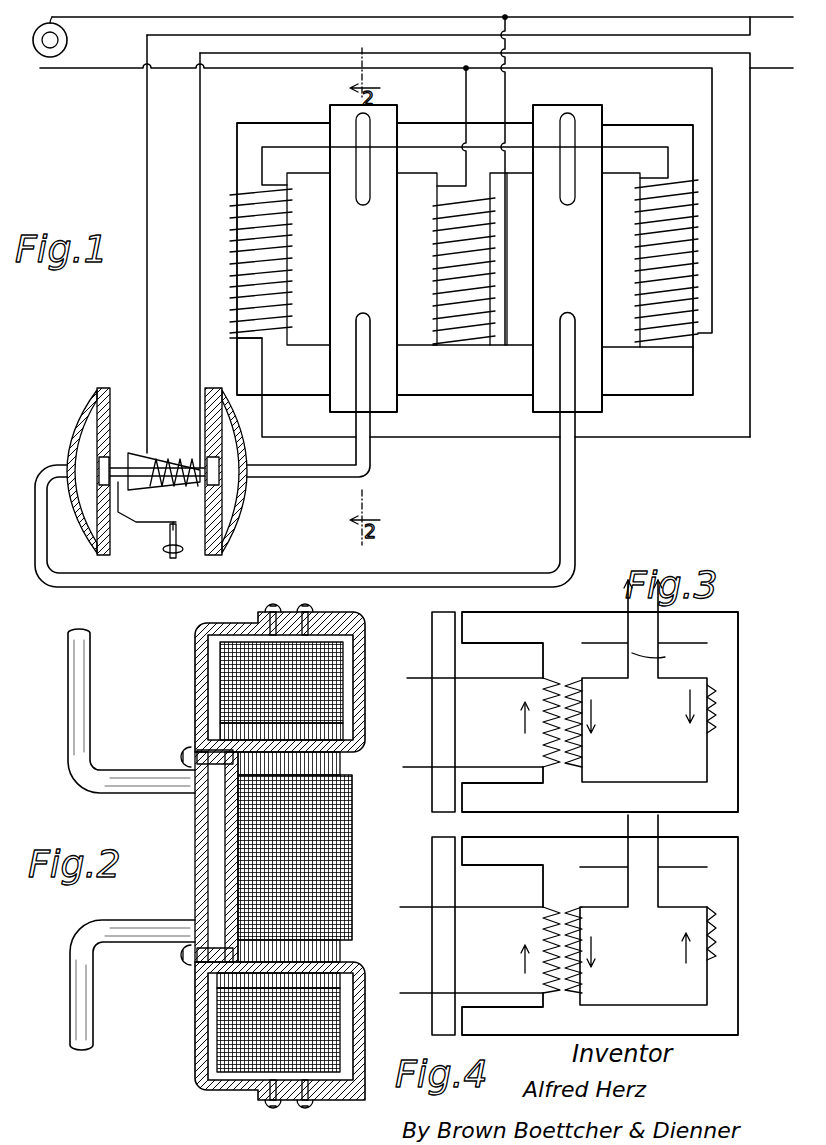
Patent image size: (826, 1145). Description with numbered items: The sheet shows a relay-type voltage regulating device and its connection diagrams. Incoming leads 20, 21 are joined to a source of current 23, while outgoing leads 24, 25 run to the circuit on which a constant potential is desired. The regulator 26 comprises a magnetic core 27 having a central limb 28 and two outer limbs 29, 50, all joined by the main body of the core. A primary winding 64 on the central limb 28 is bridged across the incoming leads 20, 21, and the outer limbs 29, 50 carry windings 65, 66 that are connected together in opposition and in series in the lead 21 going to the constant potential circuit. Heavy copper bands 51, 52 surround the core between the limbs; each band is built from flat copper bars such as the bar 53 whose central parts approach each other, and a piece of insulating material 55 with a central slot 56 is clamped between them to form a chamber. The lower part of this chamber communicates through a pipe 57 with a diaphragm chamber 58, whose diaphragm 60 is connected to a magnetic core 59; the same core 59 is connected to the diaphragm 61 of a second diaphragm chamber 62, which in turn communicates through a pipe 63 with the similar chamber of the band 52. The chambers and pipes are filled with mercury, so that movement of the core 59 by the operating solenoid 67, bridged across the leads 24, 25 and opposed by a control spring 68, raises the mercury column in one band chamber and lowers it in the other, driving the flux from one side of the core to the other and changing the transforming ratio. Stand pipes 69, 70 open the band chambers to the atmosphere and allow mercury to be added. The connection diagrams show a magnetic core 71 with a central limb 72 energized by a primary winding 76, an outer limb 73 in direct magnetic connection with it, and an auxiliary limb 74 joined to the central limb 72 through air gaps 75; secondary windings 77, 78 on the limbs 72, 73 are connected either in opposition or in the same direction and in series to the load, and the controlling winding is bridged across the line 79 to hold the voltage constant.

In FIG. 1, the incoming lead 20 is at (135, 19).
In FIG. 1, the incoming lead 21 is at (140, 70).
In FIG. 1, the source of current 23 is at (56, 57).
In FIG. 1, the outgoing lead 24 is at (765, 22).
In FIG. 1, the outgoing lead 25 is at (775, 70).
In FIG. 1, the regulator 26 is at (265, 123).
In FIG. 1, the magnetic core 27 is at (638, 373).
In FIG. 2, the magnetic core 27 is at (305, 685).
In FIG. 1, the central limb 28 is at (468, 348).
In FIG. 1, the outer limb 29 is at (250, 350).
In FIG. 1, the outer limb 50 is at (660, 345).
In FIG. 1, the copper band 51 is at (365, 238).
In FIG. 2, the copper band 51 is at (195, 690).
In FIG. 1, the copper band 52 is at (562, 245).
In FIG. 2, the copper band 52 is at (365, 632).
In FIG. 2, the flat copper bar 53 is at (248, 623).
In FIG. 2, the insulating material 55 is at (193, 750).
In FIG. 2, the central slot 56 is at (218, 820).
In FIG. 1, the pipe 57 is at (335, 475).
In FIG. 2, the pipe 57 is at (140, 930).
In FIG. 1, the diaphragm chamber 58 is at (225, 500).
In FIG. 1, the magnetic core 59 is at (140, 463).
In FIG. 1, the diaphragm 60 is at (213, 445).
In FIG. 1, the diaphragm 61 is at (97, 425).
In FIG. 1, the diaphragm chamber 62 is at (88, 452).
In FIG. 1, the pipe 63 is at (568, 480).
In FIG. 1, the primary winding 64 is at (462, 243).
In FIG. 1, the winding 65 is at (245, 228).
In FIG. 1, the winding 66 is at (668, 247).
In FIG. 1, the operating solenoid 67 is at (161, 502).
In FIG. 1, the control spring 68 is at (162, 527).
In FIG. 1, the pipe 69 is at (366, 128).
In FIG. 2, the pipe 69 is at (80, 695).
In FIG. 1, the pipe 70 is at (567, 128).
In FIG. 3, the magnetic core 71 is at (598, 612).
In FIG. 3, the central limb 72 is at (565, 655).
In FIG. 4, the central limb 72 is at (555, 888).
In FIG. 3, the outer limb 73 is at (718, 655).
In FIG. 4, the outer limb 73 is at (705, 850).
In FIG. 3, the auxiliary limb 74 is at (443, 665).
In FIG. 4, the auxiliary limb 74 is at (445, 867).
In FIG. 3, the air gaps 75 is at (462, 793).
In FIG. 4, the air gaps 75 is at (462, 1012).
In FIG. 3, the primary winding 76 is at (540, 695).
In FIG. 4, the primary winding 76 is at (541, 935).
In FIG. 3, the secondary winding 77 is at (585, 745).
In FIG. 4, the secondary winding 77 is at (585, 925).
In FIG. 3, the secondary winding 78 is at (718, 710).
In FIG. 4, the secondary winding 78 is at (716, 945).
In FIG. 3, the line 79 is at (662, 658).